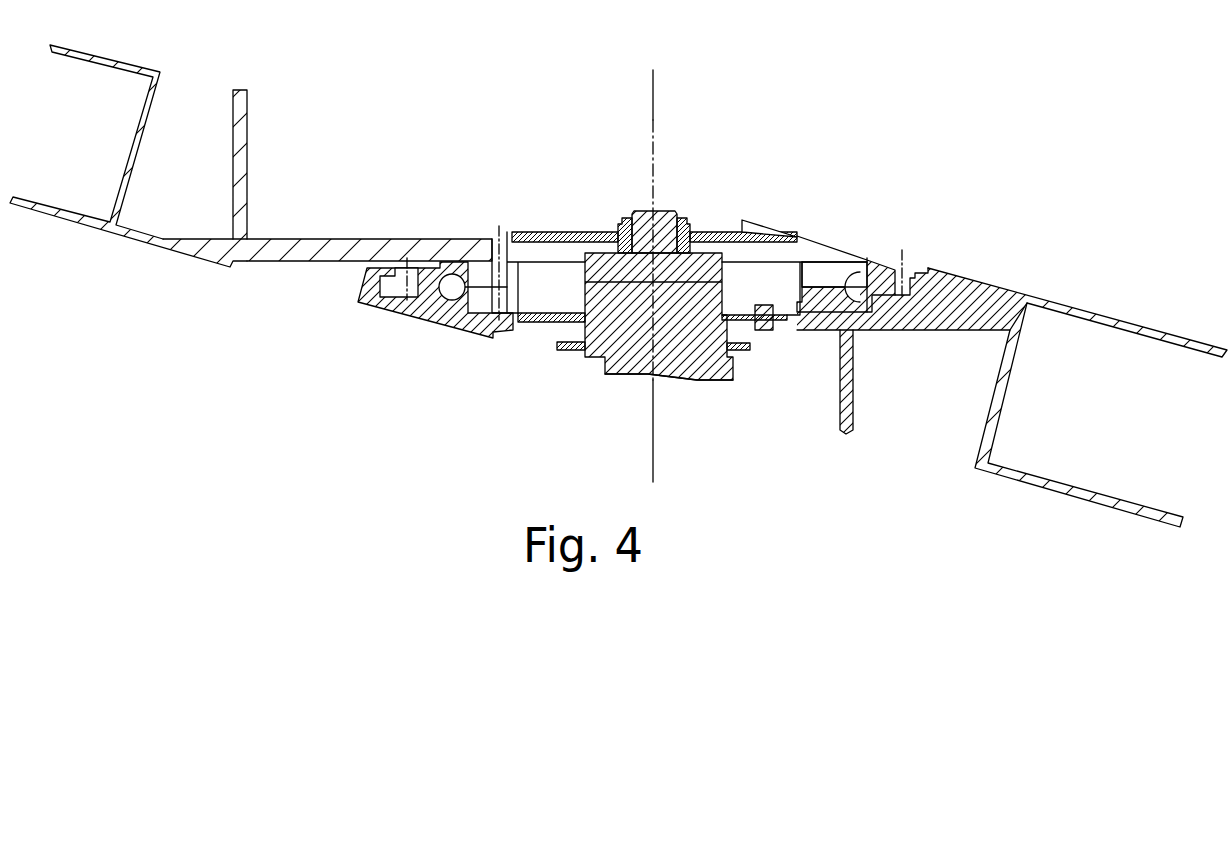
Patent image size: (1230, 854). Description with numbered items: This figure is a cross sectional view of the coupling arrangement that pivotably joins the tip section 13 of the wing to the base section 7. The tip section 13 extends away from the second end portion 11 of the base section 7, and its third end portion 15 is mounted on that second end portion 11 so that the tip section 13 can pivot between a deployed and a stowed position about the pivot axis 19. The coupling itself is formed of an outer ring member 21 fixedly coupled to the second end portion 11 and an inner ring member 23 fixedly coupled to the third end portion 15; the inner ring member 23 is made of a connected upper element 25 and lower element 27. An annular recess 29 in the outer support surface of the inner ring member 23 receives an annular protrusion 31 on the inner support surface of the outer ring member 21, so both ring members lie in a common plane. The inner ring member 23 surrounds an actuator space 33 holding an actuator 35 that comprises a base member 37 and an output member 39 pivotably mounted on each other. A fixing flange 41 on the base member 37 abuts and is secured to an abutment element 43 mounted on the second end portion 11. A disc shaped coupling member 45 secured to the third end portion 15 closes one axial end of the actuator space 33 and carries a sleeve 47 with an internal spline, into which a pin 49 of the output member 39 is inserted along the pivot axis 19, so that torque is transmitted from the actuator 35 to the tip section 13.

The base section 7 is at (1120, 424).
The second end portion 11 is at (970, 292).
The tip section 13 is at (85, 152).
The third end portion 15 is at (320, 248).
The pivot axis 19 is at (657, 103).
The outer ring member 21 is at (880, 276).
The inner ring member 23 is at (472, 283).
The upper element 25 is at (826, 273).
The lower element 27 is at (832, 300).
The annular recess 29 is at (845, 287).
The annular protrusion 31 is at (445, 298).
The actuator space 33 is at (782, 293).
The actuator 35 is at (630, 362).
The base member 37 is at (683, 355).
The output member 39 is at (693, 233).
The fixing flange 41 is at (577, 355).
The abutment element 43 is at (548, 322).
The coupling member 45 is at (553, 232).
The sleeve 47 is at (683, 218).
The pin 49 is at (650, 208).